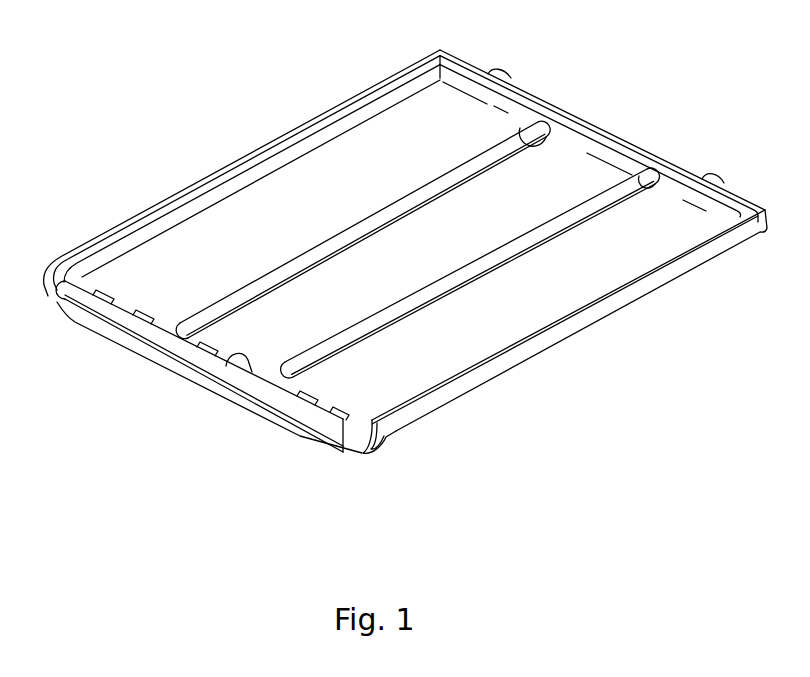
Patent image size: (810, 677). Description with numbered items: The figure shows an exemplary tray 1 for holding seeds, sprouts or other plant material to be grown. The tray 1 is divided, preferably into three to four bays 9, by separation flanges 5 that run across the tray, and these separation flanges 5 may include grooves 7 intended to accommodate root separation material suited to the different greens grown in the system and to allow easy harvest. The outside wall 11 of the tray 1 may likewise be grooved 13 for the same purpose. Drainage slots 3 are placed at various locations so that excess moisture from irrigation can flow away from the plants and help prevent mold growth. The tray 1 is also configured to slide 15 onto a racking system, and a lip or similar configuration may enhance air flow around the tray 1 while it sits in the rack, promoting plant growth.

The tray 1 is at (332, 162).
The drainage slots 3 is at (137, 310).
The separation flanges 5 is at (520, 97).
The grooves 7 is at (548, 150).
The bays 9 is at (413, 262).
The outside wall 11 is at (187, 348).
The groove 13 is at (307, 430).
The slide 15 is at (592, 315).